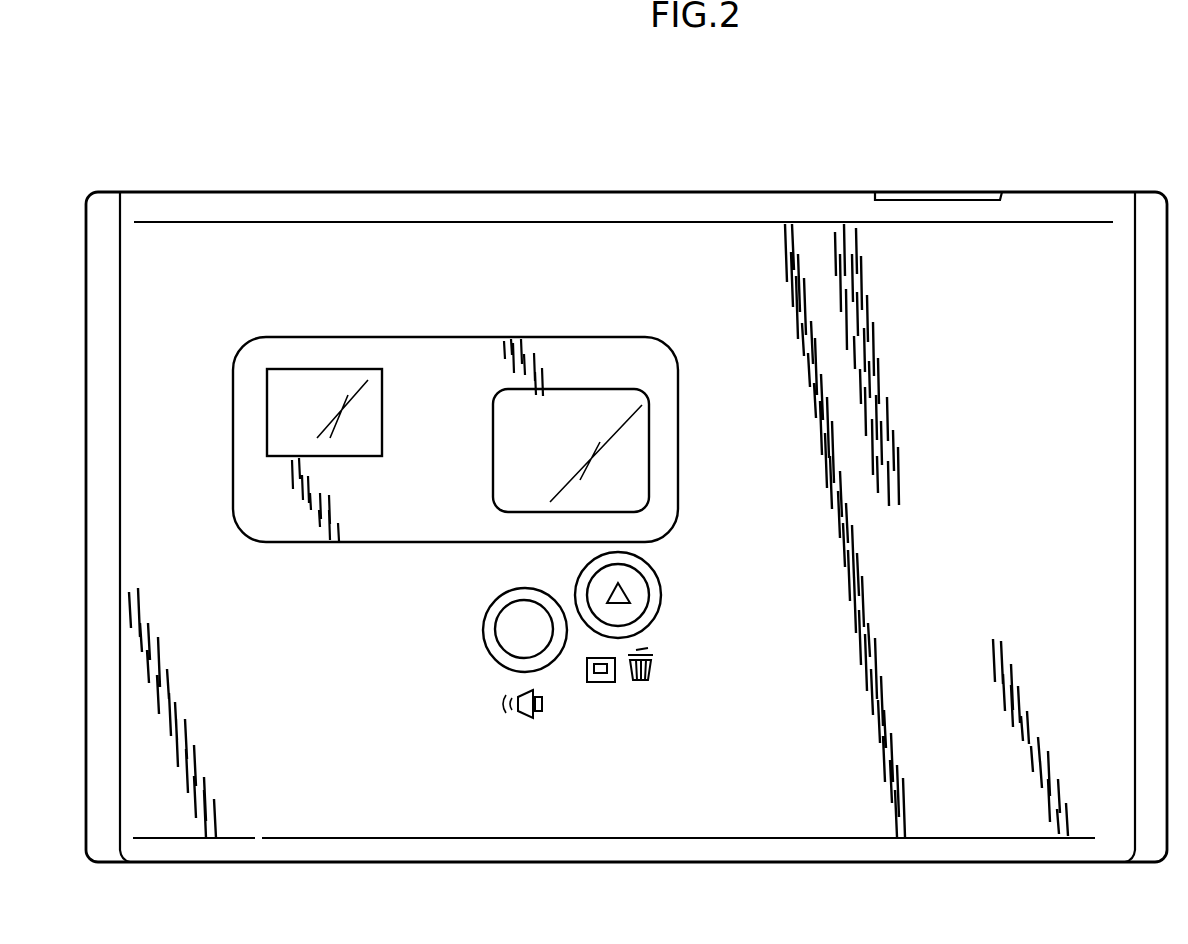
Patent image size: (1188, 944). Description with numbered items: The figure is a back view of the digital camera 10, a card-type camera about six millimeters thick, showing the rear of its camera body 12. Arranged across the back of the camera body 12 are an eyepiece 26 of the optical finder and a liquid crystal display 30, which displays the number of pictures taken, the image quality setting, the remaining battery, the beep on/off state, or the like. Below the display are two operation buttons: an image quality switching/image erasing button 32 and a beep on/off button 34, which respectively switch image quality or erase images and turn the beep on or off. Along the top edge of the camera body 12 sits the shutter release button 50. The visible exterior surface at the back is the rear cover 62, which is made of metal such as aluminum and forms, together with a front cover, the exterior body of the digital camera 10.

The digital camera 10 is at (1051, 160).
The camera body 12 is at (582, 189).
The eyepiece 26 is at (278, 400).
The liquid crystal display 30 is at (637, 443).
The image quality switching/image erasing button 32 is at (635, 590).
The beep on/off button 34 is at (507, 626).
The shutter release button 50 is at (948, 191).
The rear cover 62 is at (788, 830).